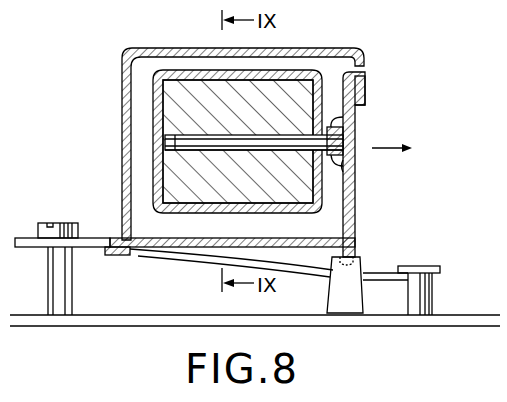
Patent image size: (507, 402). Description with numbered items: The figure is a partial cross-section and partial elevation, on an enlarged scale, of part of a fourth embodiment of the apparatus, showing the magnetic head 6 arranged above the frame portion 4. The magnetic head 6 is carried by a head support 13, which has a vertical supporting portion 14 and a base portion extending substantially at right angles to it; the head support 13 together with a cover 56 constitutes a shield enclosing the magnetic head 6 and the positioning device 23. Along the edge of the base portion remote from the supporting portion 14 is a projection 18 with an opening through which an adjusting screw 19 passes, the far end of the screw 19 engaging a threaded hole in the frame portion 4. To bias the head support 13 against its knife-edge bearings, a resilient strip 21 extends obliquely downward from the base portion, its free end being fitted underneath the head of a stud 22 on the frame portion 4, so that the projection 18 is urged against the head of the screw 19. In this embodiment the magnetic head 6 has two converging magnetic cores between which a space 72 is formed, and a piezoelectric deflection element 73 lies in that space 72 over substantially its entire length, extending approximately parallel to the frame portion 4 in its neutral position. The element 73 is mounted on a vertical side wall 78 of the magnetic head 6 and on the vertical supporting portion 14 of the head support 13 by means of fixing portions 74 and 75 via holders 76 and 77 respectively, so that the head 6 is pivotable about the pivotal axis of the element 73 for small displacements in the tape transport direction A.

The frame portion 4 is at (416, 321).
The magnetic head 6 is at (146, 142).
The head support 13 is at (360, 215).
The vertical supporting portion 14 is at (373, 138).
The projection 18 is at (27, 242).
The adjusting screw 19 is at (63, 270).
The resilient strip 21 is at (364, 271).
The stud 22 is at (432, 292).
The positioning device 23 is at (266, 127).
The cover 56 is at (160, 48).
The space 72 is at (322, 92).
The piezoelectric deflection element 73 is at (270, 146).
The fixing portion 74 is at (172, 156).
The fixing portion 75 is at (349, 166).
The holder 76 is at (172, 127).
The holder 77 is at (345, 125).
The vertical side wall 78 is at (153, 92).